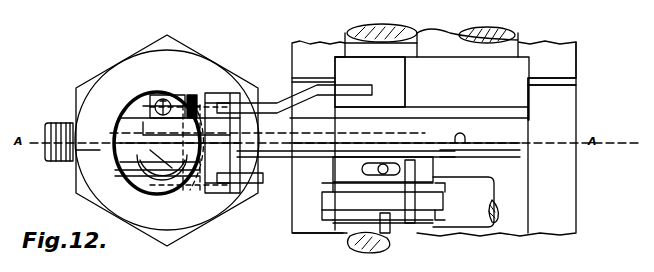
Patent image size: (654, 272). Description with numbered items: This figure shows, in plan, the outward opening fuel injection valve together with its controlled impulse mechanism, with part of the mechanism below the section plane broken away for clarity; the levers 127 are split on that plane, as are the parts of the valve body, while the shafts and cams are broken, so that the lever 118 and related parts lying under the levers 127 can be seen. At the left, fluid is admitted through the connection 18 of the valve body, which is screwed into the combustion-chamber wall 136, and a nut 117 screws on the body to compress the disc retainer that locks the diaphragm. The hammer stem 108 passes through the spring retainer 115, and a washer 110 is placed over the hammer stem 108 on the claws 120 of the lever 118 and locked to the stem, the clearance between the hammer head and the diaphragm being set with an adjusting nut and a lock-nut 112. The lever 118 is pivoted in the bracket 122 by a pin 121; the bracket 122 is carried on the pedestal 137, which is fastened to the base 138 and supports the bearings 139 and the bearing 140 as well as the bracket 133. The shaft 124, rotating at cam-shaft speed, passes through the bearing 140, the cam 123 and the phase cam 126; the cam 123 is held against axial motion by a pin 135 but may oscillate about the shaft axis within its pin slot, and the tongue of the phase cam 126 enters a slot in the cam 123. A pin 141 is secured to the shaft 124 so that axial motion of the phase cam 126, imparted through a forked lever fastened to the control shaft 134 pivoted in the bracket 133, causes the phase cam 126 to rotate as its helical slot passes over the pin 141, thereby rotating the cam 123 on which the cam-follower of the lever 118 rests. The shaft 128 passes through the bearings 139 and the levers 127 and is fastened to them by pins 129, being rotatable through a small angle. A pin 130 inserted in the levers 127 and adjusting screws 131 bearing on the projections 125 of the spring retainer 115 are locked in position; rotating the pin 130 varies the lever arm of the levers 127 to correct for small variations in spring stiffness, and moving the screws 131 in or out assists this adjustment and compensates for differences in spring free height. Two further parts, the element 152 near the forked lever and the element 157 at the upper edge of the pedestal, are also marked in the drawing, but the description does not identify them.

The connection 18 is at (50, 163).
The hammer stem 108 is at (116, 176).
The washer 110 is at (123, 150).
The lock-nut 112 is at (125, 165).
The spring retainer 115 is at (125, 132).
The nut 117 is at (93, 182).
The lever 118 is at (272, 156).
The claws 120 is at (172, 190).
The pin 121 is at (236, 196).
The bracket 122 is at (290, 100).
The cam 123 is at (455, 152).
The shaft 124 is at (400, 34).
The projections 125 is at (184, 171).
The phase cam 126 is at (128, 108).
The levers 127 is at (528, 123).
The shaft 128 is at (518, 31).
The pins 129 is at (475, 137).
The pin 130 is at (158, 92).
The adjusting screws 131 is at (172, 97).
The bracket 133 is at (343, 234).
The control shaft 134 is at (498, 205).
The pin 135 is at (362, 168).
The combustion-chamber wall 136 is at (383, 191).
The pedestal 137 is at (576, 80).
The base 138 is at (575, 57).
The bearings 139 is at (528, 98).
The bearing 140 is at (370, 82).
The pin 141 is at (388, 230).
The block 152 is at (455, 185).
The ledge 157 is at (305, 80).